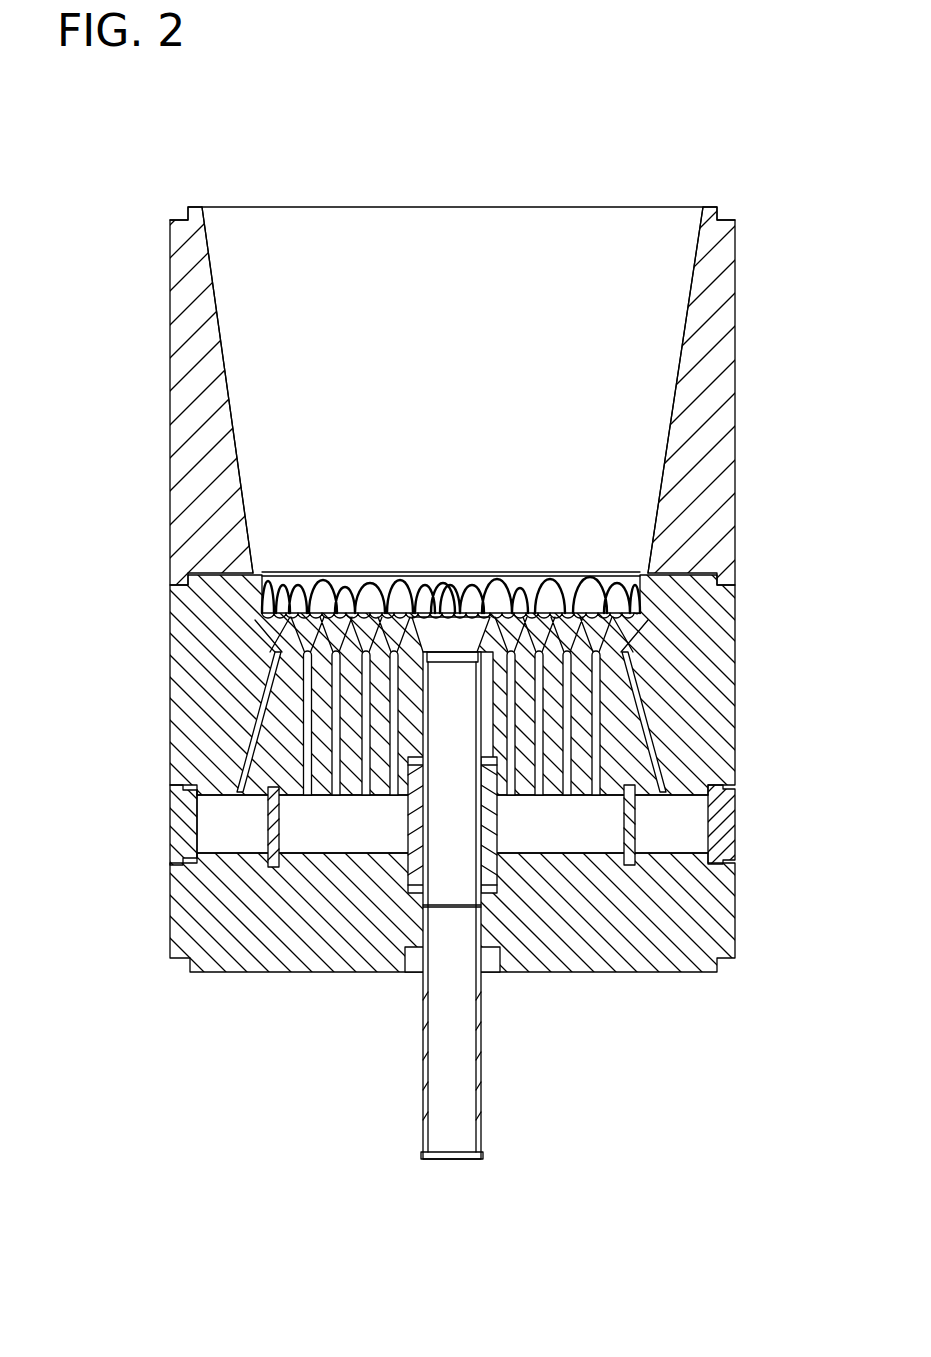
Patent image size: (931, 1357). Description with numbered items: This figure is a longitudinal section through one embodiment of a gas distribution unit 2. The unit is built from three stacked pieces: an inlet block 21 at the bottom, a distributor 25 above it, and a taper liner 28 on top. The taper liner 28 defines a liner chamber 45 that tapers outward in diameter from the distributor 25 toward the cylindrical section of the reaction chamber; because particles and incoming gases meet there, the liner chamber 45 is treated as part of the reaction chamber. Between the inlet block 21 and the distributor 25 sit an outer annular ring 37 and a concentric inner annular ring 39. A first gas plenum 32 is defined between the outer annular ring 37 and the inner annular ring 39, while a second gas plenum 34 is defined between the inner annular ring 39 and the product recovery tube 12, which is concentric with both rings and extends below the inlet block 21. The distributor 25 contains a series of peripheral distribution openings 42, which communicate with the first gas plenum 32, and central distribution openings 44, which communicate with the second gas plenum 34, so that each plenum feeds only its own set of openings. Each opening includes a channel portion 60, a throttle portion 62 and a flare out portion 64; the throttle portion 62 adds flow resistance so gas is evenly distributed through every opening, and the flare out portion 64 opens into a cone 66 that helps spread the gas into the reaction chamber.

The gas distribution unit 2 is at (718, 128).
The product recovery tube 12 is at (480, 1071).
The inlet block 21 is at (720, 915).
The distributor 25 is at (720, 712).
The taper liner 28 is at (182, 330).
The first gas plenum 32 is at (222, 830).
The second gas plenum 34 is at (344, 822).
The outer annular ring 37 is at (160, 815).
The inner annular ring 39 is at (203, 788).
The peripheral distribution openings 42 is at (655, 752).
The central distribution openings 44 is at (600, 683).
The liner chamber 45 is at (522, 245).
The channel portion 60 is at (265, 700).
The throttle portion 62 is at (275, 650).
The flare out portion 64 is at (553, 598).
The cone 66 is at (443, 598).